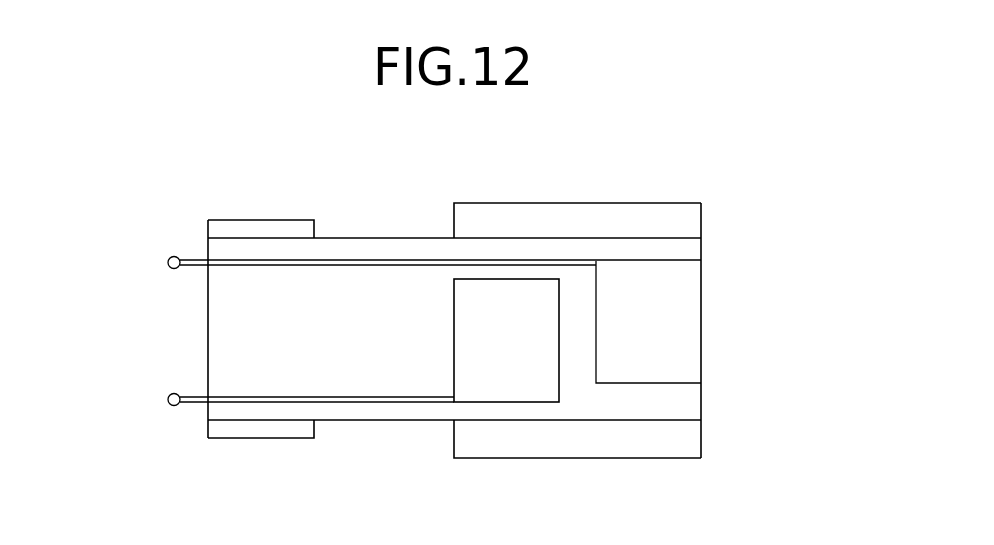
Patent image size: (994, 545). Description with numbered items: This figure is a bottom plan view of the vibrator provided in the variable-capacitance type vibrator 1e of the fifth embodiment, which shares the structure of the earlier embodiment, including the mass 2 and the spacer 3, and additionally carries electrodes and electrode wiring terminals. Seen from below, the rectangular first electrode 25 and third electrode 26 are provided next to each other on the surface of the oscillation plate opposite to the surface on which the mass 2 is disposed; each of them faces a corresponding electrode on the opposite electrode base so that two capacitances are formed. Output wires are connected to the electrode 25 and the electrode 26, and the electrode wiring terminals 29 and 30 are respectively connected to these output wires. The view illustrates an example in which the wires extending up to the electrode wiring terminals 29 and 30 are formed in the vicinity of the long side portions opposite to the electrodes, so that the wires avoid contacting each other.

The variable-capacitance type vibrator 1e is at (673, 161).
The mass 2 is at (687, 222).
The spacer 3 is at (215, 227).
The first electrode 25 is at (675, 324).
The third electrode 26 is at (499, 385).
The electrode wiring terminal 29 is at (168, 262).
The electrode wiring terminal 30 is at (168, 399).